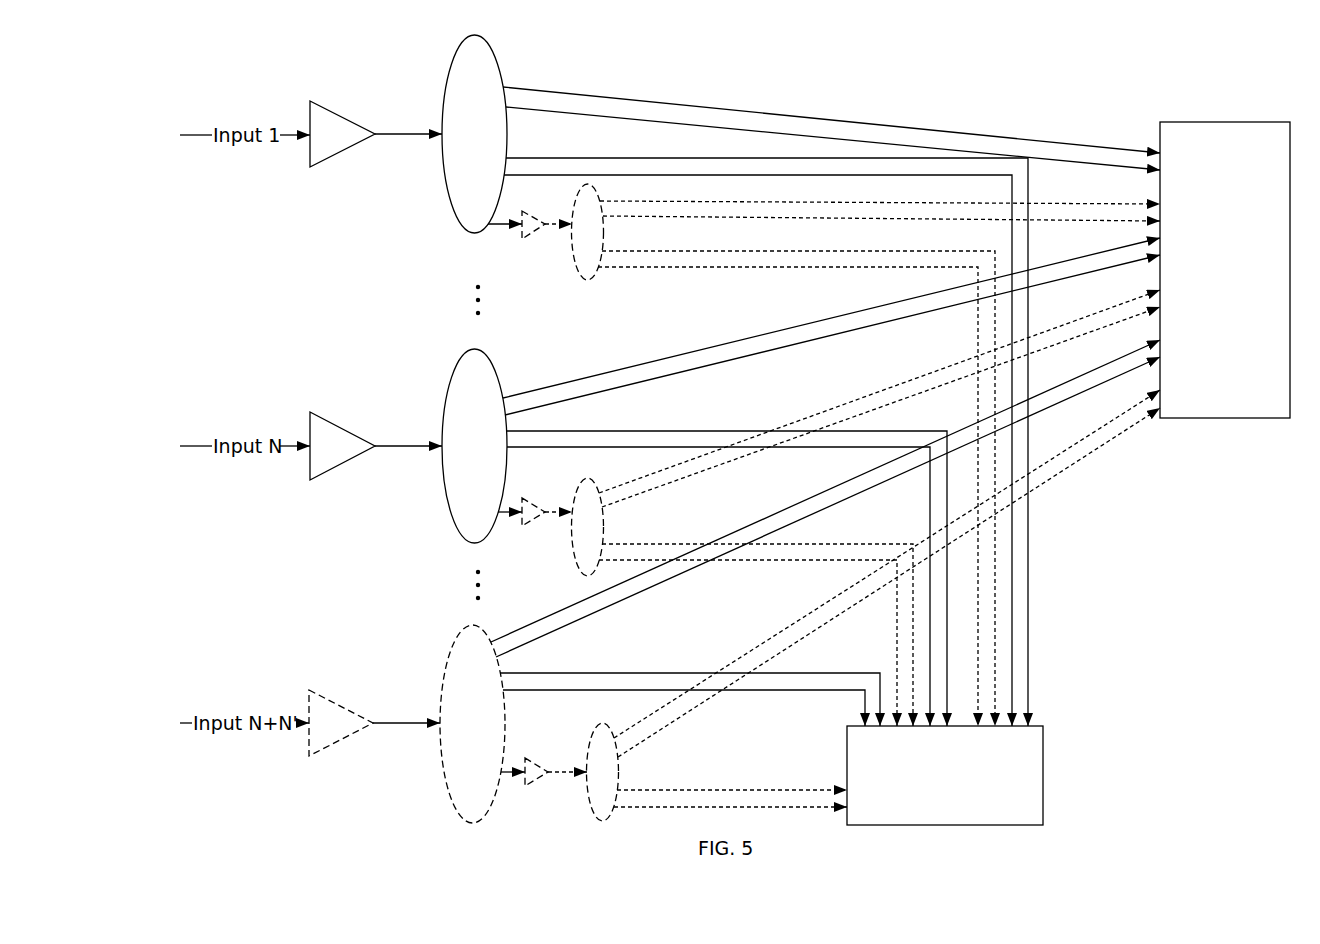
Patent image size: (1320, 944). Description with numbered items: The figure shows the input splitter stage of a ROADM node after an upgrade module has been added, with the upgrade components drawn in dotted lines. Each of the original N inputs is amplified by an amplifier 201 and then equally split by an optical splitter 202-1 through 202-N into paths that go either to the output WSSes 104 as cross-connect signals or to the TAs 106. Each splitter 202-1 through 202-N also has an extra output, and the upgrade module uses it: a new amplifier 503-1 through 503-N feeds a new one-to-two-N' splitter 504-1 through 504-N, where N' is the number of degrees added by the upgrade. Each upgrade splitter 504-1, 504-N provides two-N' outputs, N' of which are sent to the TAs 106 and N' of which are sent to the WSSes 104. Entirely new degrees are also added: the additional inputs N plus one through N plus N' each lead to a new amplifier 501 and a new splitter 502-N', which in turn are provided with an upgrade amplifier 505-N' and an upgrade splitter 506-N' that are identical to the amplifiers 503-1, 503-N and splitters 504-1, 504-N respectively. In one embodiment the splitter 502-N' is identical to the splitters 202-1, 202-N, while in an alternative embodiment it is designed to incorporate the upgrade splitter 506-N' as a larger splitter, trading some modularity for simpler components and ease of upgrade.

The amplifier 201 is at (356, 146).
The optical splitter 202-1 is at (433, 183).
The optical splitter 202-N is at (433, 502).
The upgrade amplifier 503-1 is at (531, 241).
The upgrade amplifier 503-N is at (530, 528).
The upgrade splitter 504-1 is at (601, 284).
The upgrade splitter 504-N is at (610, 527).
The new amplifier 501 is at (354, 734).
The new splitter 502-N' is at (407, 724).
The upgrade amplifier 505-N' is at (559, 741).
The upgrade splitter 506-N' is at (562, 773).
The output WSS 104 is at (1243, 294).
The TA 106 is at (963, 798).